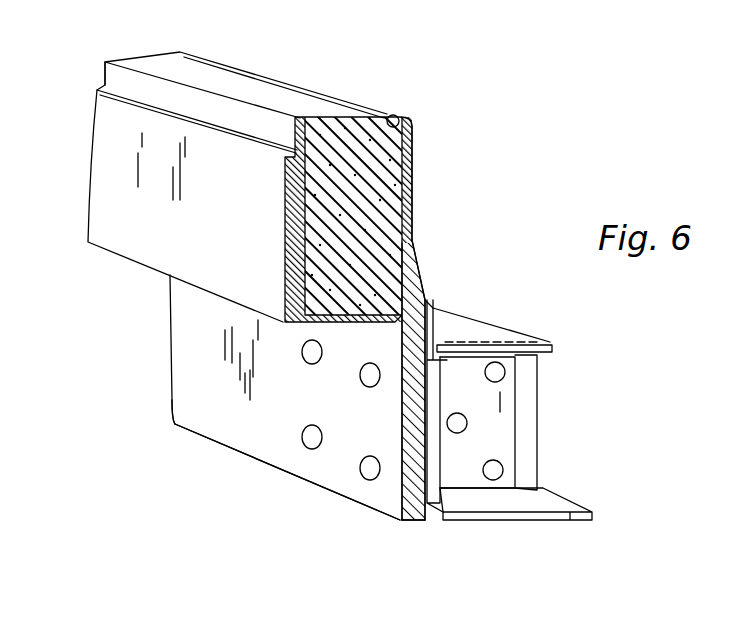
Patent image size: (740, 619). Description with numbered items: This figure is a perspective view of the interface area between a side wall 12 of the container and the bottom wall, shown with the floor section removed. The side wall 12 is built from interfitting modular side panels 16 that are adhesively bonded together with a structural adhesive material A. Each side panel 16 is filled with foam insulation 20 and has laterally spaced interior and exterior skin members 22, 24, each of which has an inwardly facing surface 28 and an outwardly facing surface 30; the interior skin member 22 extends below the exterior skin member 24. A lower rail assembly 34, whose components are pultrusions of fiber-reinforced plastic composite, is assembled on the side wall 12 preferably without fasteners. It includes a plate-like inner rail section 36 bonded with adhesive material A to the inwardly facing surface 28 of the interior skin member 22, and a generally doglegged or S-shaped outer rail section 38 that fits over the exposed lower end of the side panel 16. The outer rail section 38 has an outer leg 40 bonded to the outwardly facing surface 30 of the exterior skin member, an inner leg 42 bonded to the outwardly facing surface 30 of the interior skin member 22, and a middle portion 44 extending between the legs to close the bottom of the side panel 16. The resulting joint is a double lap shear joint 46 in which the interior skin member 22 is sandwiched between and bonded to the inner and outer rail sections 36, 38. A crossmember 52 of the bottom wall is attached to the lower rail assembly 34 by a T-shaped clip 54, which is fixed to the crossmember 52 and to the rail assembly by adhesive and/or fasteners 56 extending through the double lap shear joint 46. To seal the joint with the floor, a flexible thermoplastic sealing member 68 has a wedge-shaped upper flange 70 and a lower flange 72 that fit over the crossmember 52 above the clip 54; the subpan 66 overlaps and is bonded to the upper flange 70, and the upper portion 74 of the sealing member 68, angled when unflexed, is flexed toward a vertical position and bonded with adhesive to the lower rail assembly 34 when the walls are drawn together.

The side wall 12 is at (315, 78).
The side panel 16 is at (421, 145).
The foam insulation 20 is at (165, 66).
The interior skin member 22 is at (412, 167).
The exterior skin member 24 is at (105, 72).
The inwardly facing surface 28 is at (413, 213).
The outwardly facing surface 30 is at (246, 121).
The lower rail assembly 34 is at (225, 472).
The inner rail section 36 is at (421, 262).
The outer rail section 38 is at (185, 430).
The outer leg 40 is at (132, 225).
The inner leg 42 is at (183, 360).
The middle portion 44 is at (367, 324).
The double lap shear joint 46 is at (417, 527).
The crossmember 52 is at (572, 521).
The T-shaped clip 54 is at (507, 403).
The fastener 56 is at (360, 376).
The subpan 66 is at (552, 346).
The sealing member 68 is at (433, 289).
The upper flange 70 is at (433, 313).
The lower flange 72 is at (447, 362).
The upper portion 74 is at (436, 312).
The adhesive material A is at (293, 156).